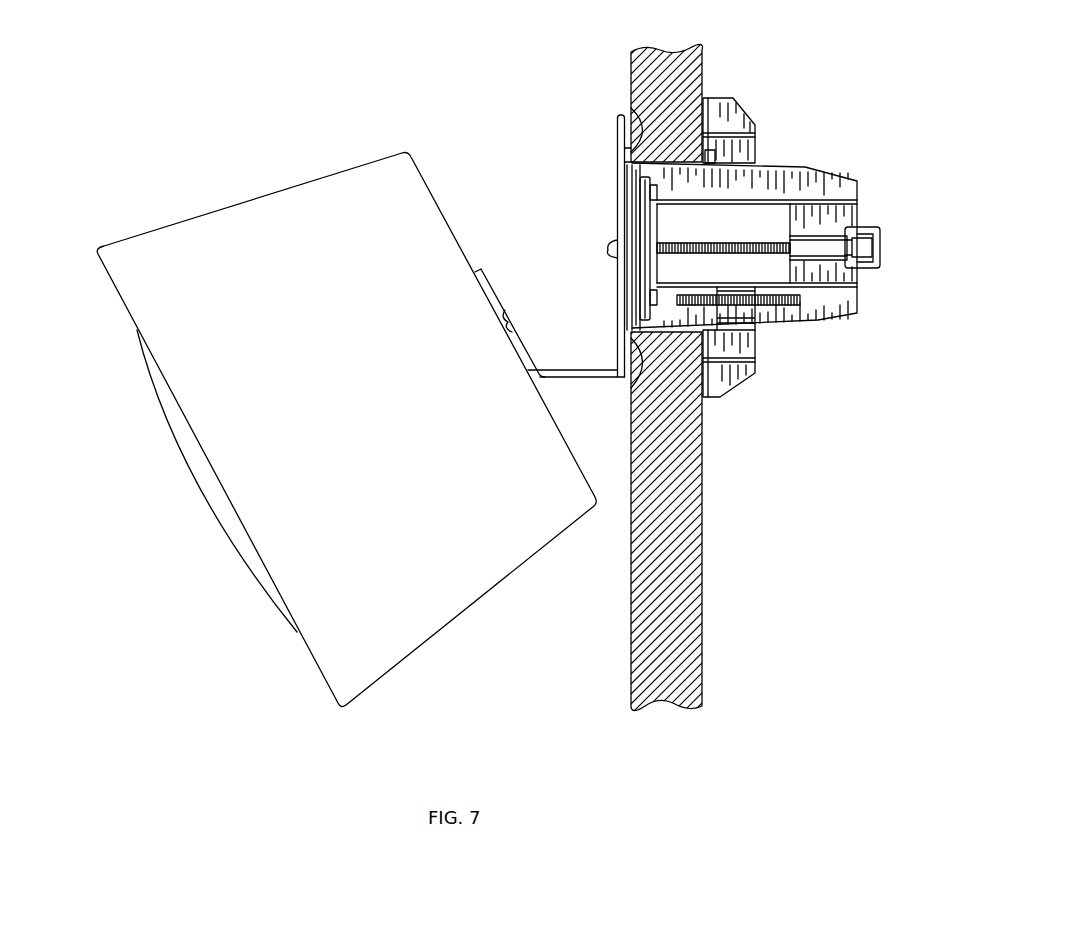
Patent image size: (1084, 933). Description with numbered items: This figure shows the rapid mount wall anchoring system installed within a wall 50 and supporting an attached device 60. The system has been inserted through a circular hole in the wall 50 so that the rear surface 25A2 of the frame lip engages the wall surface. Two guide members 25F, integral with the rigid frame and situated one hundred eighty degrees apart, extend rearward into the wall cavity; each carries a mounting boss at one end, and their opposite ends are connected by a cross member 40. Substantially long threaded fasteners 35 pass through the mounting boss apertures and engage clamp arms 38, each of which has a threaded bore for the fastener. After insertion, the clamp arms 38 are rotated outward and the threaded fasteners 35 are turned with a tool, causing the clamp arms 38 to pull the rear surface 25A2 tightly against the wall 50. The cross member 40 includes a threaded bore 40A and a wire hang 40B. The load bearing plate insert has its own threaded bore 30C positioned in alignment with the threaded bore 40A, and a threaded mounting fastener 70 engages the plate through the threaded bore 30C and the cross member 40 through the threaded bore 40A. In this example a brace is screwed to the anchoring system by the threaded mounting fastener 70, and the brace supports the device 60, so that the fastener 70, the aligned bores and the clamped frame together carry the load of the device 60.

The wall 50 is at (698, 580).
The device 60 is at (431, 612).
The rear surface 25A2 is at (618, 105).
The guide member 25F is at (798, 170).
The threaded mounting fastener 70 is at (692, 252).
The threaded bore 30C is at (657, 226).
The threaded bore 40A is at (833, 243).
The wire hang 40B is at (878, 250).
The cross member 40 is at (852, 272).
The threaded fastener 35 is at (785, 308).
The clamp arm 38 is at (730, 118).